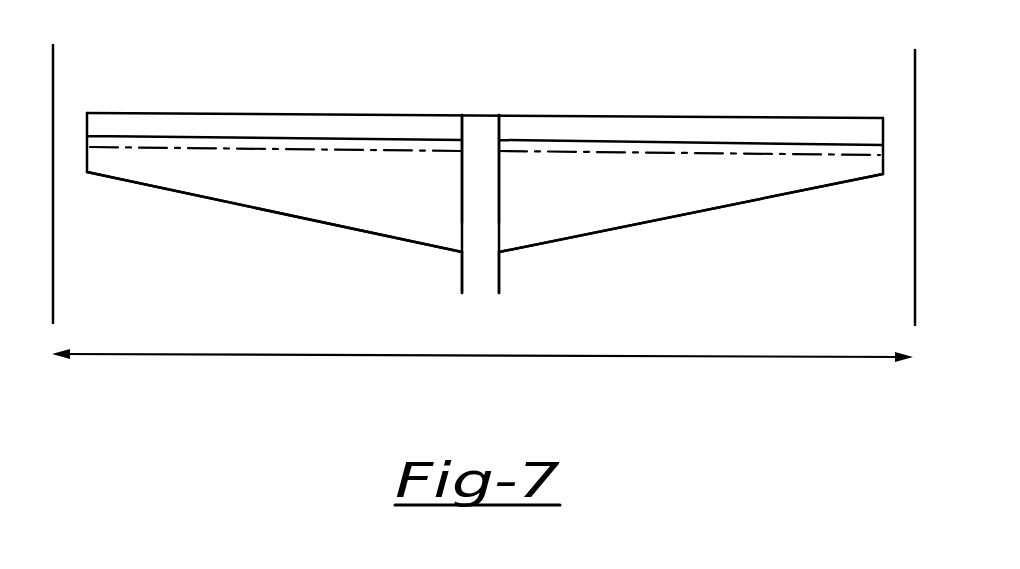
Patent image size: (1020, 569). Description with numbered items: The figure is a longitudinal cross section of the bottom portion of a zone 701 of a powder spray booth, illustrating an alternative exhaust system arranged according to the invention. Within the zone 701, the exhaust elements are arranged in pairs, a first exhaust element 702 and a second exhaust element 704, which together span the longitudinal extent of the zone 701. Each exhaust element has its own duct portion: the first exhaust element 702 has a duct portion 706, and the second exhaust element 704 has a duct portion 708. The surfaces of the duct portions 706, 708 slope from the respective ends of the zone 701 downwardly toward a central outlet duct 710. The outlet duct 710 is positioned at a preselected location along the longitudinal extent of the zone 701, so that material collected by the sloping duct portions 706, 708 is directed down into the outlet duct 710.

The zone 701 is at (525, 357).
The exhaust element 702 is at (258, 112).
The exhaust element 704 is at (687, 55).
The duct portion 706 is at (285, 190).
The duct portion 708 is at (627, 202).
The outlet duct 710 is at (488, 273).